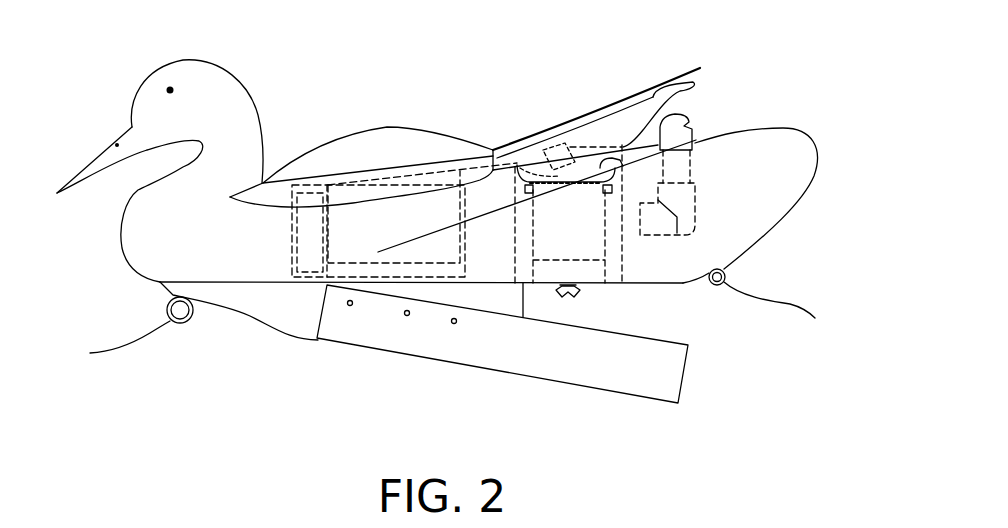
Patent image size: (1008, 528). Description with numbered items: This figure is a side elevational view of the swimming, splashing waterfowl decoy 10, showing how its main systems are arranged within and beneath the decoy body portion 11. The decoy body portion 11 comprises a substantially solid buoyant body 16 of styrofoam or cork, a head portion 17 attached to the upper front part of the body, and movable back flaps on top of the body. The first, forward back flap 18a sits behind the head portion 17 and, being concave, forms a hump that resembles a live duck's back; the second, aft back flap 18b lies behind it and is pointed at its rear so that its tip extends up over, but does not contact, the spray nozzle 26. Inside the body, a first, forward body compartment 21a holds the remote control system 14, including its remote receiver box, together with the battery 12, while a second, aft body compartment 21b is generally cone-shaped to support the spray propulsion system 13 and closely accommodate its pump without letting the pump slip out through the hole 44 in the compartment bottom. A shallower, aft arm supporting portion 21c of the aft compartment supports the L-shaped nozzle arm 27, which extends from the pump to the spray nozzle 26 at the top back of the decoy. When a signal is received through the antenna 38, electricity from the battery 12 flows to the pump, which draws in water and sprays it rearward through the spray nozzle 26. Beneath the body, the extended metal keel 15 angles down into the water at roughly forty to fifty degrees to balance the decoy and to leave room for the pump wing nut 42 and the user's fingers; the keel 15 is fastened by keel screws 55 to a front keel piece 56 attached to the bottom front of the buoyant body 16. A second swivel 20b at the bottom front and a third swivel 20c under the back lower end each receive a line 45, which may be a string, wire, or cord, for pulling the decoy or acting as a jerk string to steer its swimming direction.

The waterfowl decoy 10 is at (777, 75).
The decoy body portion 11 is at (812, 120).
The battery 12 is at (378, 223).
The spray propulsion system 13 is at (538, 132).
The remote control system 14 is at (312, 218).
The keel 15 is at (413, 345).
The buoyant body 16 is at (218, 262).
The head portion 17 is at (228, 80).
The first back flap 18a is at (387, 137).
The second back flap 18b is at (632, 113).
The second swivel 20b is at (187, 323).
The third swivel 20c is at (720, 285).
The first forward body compartment 21a is at (337, 270).
The second aft body compartment 21b is at (522, 290).
The aft arm supporting portion 21c is at (613, 227).
The spray nozzle 26 is at (693, 133).
The nozzle arm 27 is at (677, 218).
The antenna 38 is at (700, 70).
The pump wing nut 42 is at (563, 298).
The hole 44 is at (612, 230).
The line 45 is at (105, 350).
The keel screws 55 is at (454, 324).
The front keel piece 56 is at (290, 303).